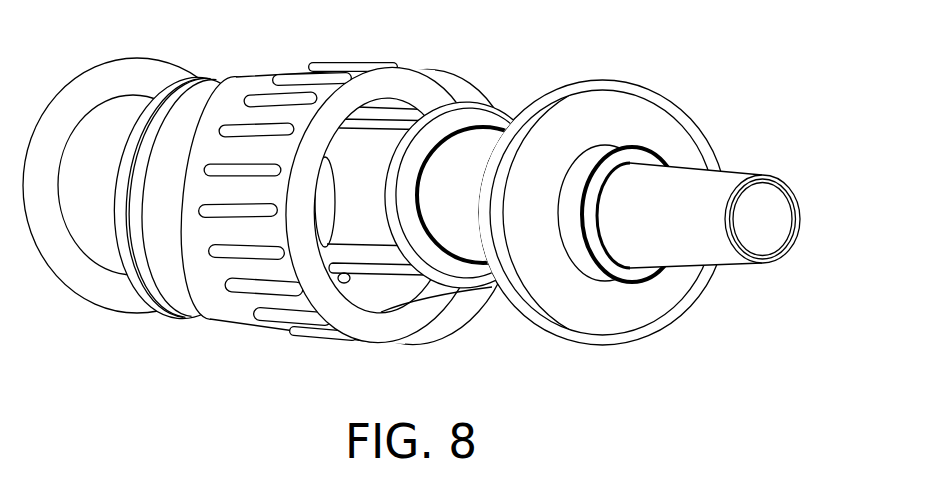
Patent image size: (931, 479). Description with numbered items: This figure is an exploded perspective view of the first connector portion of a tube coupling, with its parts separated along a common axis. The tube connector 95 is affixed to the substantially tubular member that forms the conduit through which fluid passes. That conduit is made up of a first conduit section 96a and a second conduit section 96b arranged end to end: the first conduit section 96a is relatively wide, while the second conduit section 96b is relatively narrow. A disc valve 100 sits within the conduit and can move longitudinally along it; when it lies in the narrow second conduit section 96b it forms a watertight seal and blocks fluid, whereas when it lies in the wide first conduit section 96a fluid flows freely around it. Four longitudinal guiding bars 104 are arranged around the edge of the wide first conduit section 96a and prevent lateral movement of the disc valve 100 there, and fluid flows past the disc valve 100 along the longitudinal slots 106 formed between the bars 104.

The tube connector 95 is at (672, 102).
The first conduit section 96a is at (413, 70).
The second conduit section 96b is at (223, 74).
The disc valve 100 is at (455, 222).
The longitudinal guiding bars 104 is at (377, 260).
The longitudinal slots 106 is at (363, 175).